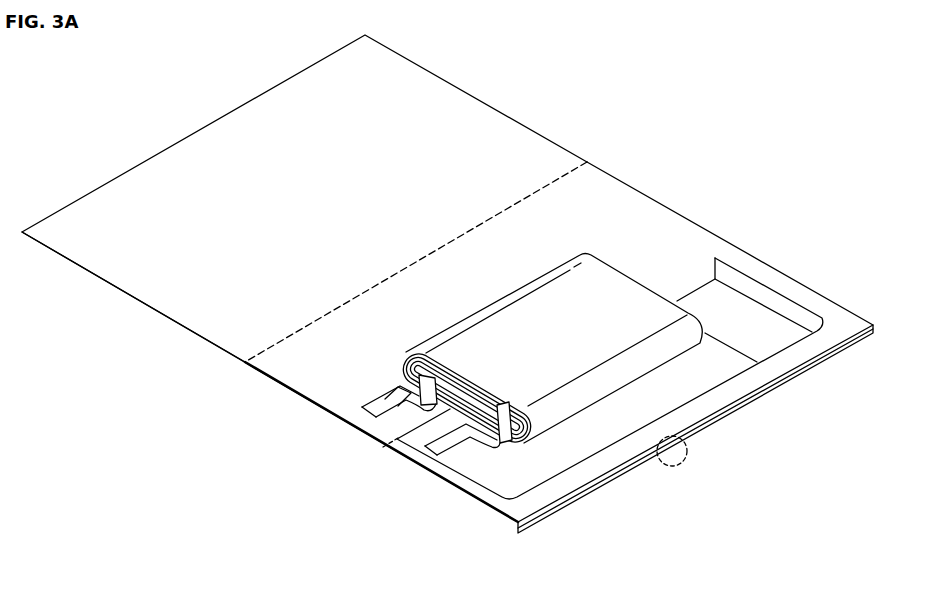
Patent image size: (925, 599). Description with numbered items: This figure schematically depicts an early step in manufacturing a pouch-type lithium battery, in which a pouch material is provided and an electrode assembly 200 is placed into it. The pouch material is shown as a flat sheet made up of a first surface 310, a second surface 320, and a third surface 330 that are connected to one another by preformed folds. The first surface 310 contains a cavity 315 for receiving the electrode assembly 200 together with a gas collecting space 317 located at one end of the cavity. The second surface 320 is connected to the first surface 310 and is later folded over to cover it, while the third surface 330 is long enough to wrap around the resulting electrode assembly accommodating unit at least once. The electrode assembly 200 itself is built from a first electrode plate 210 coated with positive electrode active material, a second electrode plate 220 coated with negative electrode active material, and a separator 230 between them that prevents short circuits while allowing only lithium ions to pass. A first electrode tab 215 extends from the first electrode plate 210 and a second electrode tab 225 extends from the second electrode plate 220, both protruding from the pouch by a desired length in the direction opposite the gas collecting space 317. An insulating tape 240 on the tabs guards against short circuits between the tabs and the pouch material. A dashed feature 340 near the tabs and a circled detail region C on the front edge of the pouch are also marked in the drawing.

The electrode assembly 200 is at (491, 296).
The first electrode plate 210 is at (410, 353).
The first electrode tab 215 is at (364, 408).
The second electrode plate 220 is at (405, 374).
The second electrode tab 225 is at (426, 447).
The separator 230 is at (405, 357).
The insulating tape 240 is at (387, 389).
The first surface 310 is at (793, 290).
The cavity 315 is at (541, 469).
The gas collecting space 317 is at (763, 341).
The second surface 320 is at (634, 196).
The third surface 330 is at (481, 113).
The connection hole 340 is at (392, 440).
The detail region C is at (687, 448).